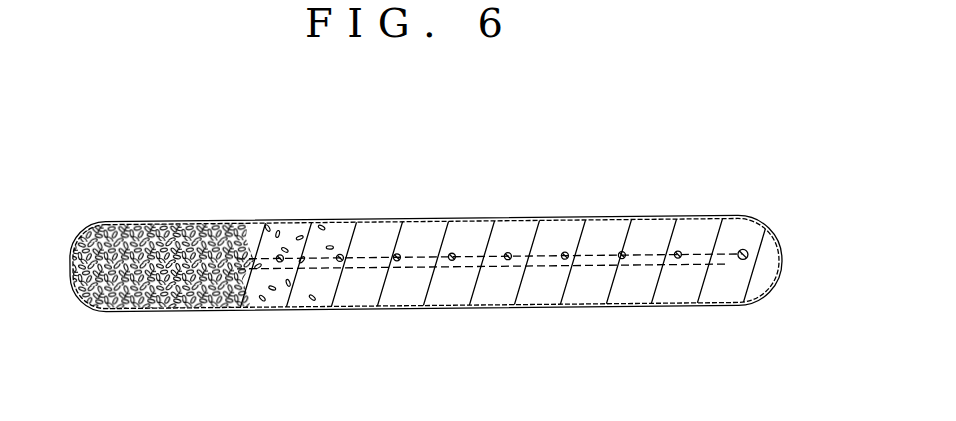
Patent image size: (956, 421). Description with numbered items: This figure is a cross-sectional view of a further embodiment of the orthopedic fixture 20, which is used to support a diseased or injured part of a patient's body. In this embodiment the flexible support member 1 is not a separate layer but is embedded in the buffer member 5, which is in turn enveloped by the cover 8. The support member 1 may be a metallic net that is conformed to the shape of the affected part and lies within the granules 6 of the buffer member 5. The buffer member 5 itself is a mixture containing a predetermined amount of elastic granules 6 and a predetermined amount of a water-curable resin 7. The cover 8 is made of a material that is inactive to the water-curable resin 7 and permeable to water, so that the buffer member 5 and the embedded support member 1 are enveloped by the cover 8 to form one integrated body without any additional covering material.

The orthopedic fixture 20 is at (548, 106).
The cover 8 is at (608, 217).
The water-curable resin 7 is at (120, 237).
The elastic granules 6 is at (201, 224).
The buffer member 5 is at (440, 245).
The support member 1 is at (513, 266).